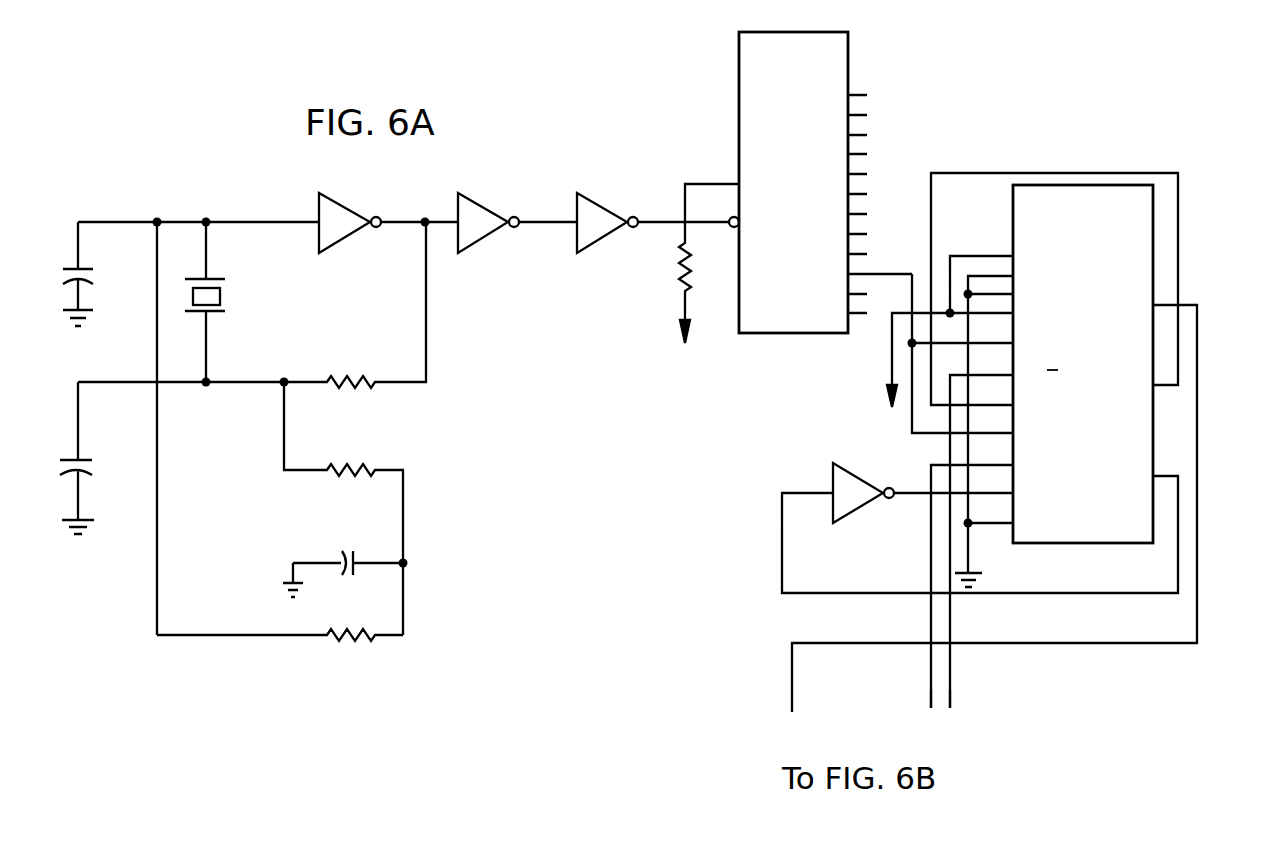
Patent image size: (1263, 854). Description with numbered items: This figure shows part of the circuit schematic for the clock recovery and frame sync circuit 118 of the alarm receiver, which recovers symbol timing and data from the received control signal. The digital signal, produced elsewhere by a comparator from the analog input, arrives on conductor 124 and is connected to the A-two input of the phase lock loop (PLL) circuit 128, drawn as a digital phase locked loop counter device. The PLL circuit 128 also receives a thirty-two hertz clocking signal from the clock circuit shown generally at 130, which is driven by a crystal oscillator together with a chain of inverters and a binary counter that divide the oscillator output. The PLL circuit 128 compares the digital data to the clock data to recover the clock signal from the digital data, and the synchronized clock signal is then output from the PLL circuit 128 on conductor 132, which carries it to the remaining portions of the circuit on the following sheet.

The clock recovery and frame sync circuit 118 is at (685, 202).
The conductor 124 is at (903, 690).
The phase lock loop circuit 128 is at (980, 423).
The clock circuit 130 is at (325, 430).
The conductor 132 is at (1022, 508).